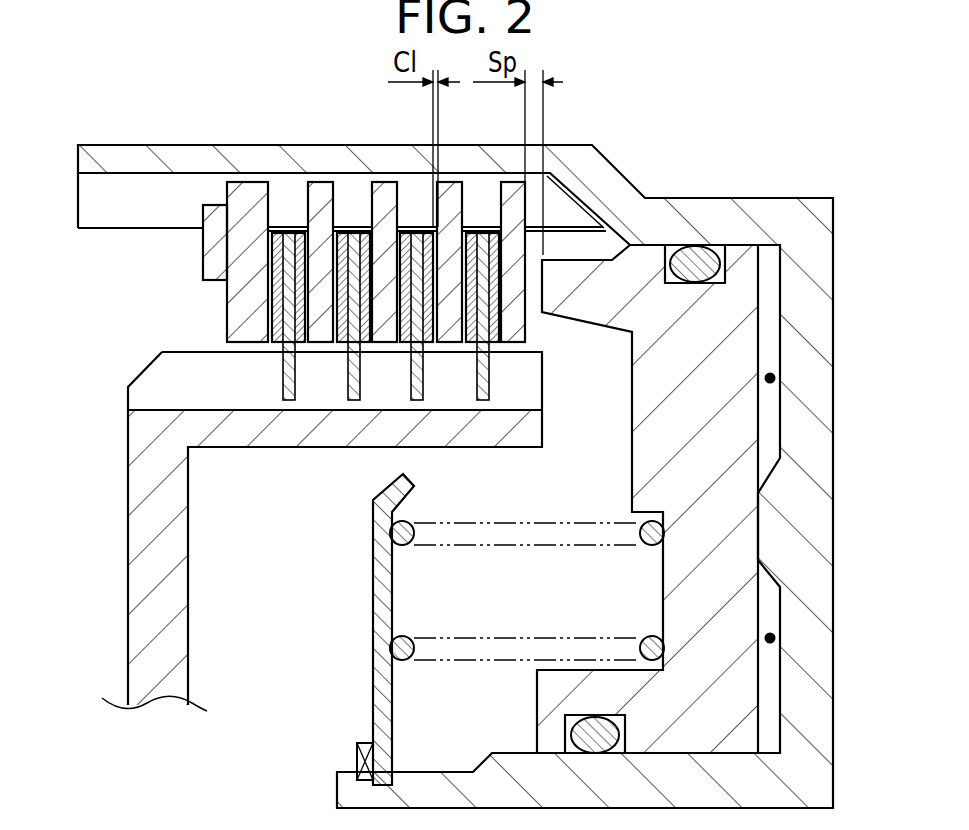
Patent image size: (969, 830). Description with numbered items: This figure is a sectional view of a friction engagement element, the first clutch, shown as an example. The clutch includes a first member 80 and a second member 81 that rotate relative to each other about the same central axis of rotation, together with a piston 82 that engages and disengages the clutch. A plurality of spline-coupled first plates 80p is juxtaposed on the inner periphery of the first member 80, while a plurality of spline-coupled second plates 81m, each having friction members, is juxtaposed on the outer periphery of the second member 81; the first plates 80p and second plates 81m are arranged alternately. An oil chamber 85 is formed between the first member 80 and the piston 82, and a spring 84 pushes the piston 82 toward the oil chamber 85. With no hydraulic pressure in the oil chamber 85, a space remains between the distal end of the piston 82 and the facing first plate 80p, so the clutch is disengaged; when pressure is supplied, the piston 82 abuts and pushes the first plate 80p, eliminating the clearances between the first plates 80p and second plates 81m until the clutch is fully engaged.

The first member 80 is at (181, 145).
The first plates 80p is at (322, 186).
The second member 81 is at (128, 596).
The second plates 81m is at (282, 377).
The piston 82 is at (632, 430).
The spring 84 is at (457, 660).
The oil chamber 85 is at (775, 378).